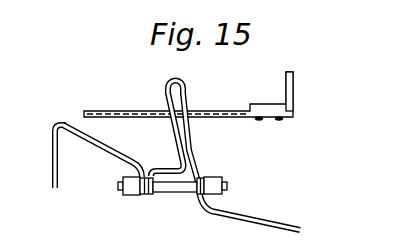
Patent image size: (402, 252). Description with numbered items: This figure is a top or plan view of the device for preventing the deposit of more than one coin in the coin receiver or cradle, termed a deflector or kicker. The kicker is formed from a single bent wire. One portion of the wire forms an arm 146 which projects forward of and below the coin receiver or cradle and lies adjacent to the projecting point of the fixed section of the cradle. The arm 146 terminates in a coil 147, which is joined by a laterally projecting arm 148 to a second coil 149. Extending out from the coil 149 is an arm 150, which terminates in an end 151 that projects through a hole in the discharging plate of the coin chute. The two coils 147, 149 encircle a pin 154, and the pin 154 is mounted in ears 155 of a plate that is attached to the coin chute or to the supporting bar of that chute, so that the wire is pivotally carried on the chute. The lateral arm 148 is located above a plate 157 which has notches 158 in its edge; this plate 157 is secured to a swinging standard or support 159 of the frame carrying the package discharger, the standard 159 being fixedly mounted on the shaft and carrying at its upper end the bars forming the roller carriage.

The arm 146 is at (241, 161).
The coil 147 is at (202, 178).
The arm 148 is at (187, 134).
The coil 149 is at (147, 177).
The arm 150 is at (102, 151).
The end 151 is at (73, 156).
The pin 154 is at (172, 184).
The ears 155 is at (223, 179).
The plate 157 is at (201, 97).
The notches 158 is at (188, 96).
The swinging standard or support 159 is at (308, 91).